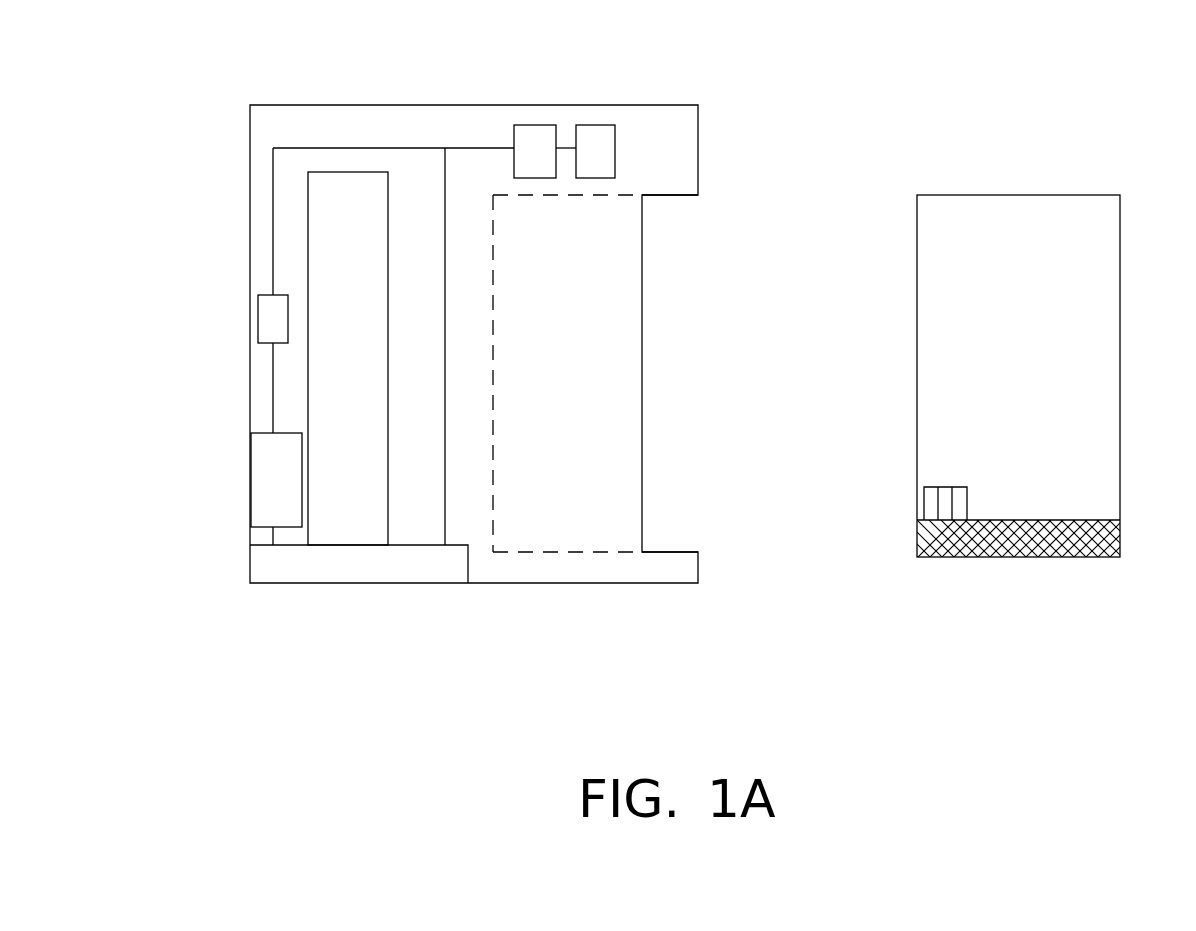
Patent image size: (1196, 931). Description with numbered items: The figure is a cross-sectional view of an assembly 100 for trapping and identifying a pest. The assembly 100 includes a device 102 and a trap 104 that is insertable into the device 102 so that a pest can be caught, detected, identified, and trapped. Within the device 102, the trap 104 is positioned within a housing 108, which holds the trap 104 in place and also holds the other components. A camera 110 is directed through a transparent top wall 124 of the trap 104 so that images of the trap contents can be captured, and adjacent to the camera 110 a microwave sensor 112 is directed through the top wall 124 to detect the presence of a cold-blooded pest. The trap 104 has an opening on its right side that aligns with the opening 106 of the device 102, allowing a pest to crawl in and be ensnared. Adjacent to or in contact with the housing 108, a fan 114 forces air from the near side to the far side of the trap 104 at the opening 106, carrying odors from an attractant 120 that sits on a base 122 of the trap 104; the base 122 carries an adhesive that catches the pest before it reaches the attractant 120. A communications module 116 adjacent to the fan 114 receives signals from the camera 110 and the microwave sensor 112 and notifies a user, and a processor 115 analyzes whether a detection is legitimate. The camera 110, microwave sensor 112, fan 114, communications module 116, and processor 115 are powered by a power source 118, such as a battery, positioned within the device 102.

The assembly 100 is at (177, 162).
The device 102 is at (248, 269).
The trap 104 is at (915, 235).
The opening 106 is at (674, 196).
The housing 108 is at (623, 194).
The camera 110 is at (588, 125).
The microwave sensor 112 is at (514, 140).
The fan 114 is at (325, 172).
The processor 115 is at (258, 310).
The communications module 116 is at (258, 432).
The power source 118 is at (468, 566).
The attractant 120 is at (943, 487).
The base 122 is at (1090, 520).
The top wall 124 is at (1003, 195).